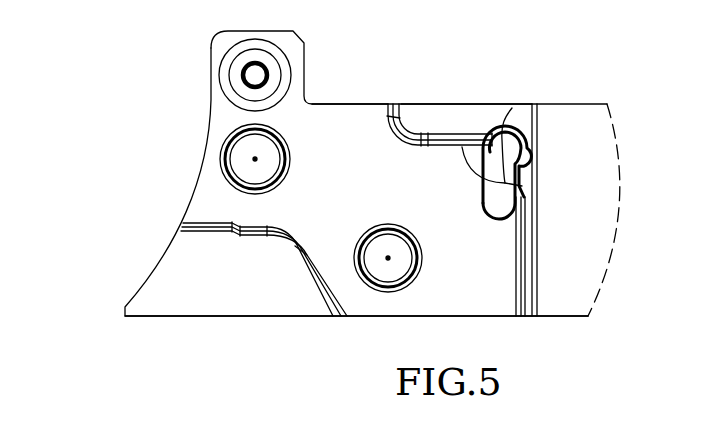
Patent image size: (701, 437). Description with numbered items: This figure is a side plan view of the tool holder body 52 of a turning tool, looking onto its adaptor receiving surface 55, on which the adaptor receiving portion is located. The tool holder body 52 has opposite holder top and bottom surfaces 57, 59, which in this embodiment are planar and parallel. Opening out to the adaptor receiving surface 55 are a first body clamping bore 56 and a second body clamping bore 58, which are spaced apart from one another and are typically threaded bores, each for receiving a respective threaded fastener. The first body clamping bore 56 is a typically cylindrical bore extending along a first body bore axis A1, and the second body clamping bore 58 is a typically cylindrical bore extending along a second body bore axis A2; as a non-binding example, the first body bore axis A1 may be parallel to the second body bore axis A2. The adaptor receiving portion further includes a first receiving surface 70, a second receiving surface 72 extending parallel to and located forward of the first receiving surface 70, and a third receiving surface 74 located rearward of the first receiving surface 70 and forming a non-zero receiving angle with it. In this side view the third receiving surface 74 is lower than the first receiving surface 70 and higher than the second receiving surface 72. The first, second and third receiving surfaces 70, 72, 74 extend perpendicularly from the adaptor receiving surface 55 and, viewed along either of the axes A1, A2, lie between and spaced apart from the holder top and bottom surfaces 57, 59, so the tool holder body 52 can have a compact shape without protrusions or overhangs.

The tool holder body 52 is at (490, 82).
The adaptor receiving surface 55 is at (358, 118).
The first body clamping bore 56 is at (292, 130).
The holder top surface 57 is at (428, 104).
The second body clamping bore 58 is at (410, 222).
The holder bottom surface 59 is at (388, 317).
The first receiving surface 70 is at (448, 150).
The second receiving surface 72 is at (208, 222).
The third receiving surface 74 is at (512, 108).
The first body bore axis A1 is at (255, 159).
The second body bore axis A2 is at (388, 258).